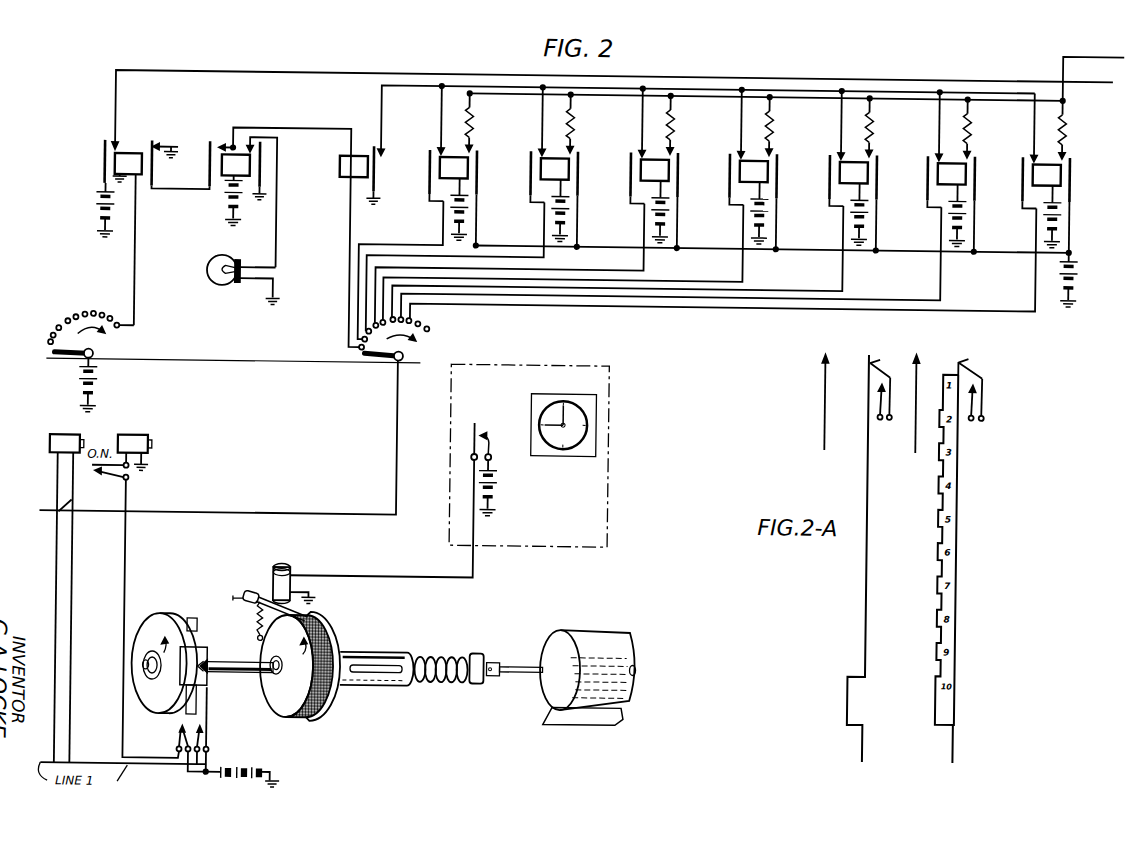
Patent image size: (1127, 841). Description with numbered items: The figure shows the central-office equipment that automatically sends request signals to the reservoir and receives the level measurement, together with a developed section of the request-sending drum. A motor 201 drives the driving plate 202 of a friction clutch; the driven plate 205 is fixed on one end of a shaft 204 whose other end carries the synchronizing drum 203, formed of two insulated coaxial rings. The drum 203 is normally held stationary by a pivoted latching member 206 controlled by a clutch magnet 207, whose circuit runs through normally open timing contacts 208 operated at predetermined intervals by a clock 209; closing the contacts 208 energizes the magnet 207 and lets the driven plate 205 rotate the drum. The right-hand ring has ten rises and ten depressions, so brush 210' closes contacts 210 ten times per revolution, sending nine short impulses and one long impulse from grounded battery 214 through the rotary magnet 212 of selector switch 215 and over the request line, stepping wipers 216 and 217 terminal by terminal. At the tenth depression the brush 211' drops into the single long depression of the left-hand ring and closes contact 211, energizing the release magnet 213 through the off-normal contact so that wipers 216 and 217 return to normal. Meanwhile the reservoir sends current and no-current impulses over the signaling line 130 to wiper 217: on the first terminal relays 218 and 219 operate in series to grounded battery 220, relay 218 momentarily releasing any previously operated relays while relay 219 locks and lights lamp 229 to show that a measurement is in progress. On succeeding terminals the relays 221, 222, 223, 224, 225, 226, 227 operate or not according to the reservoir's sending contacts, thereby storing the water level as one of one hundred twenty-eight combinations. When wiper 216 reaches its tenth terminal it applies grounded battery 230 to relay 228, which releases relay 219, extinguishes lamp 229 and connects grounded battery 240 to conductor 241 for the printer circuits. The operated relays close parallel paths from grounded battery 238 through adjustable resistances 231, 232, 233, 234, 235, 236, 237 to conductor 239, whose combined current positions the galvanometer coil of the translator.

In FIG. 2, the signaling line 130 is at (191, 511).
In FIG. 2, the motor 201 is at (624, 640).
In FIG. 2, the driving plate of friction clutch 202 is at (344, 629).
In FIG. 2, the synchronizing drum 203 is at (178, 612).
In FIG. 2, the shaft 204 is at (224, 660).
In FIG. 2, the driven plate of friction clutch 205 is at (289, 706).
In FIG. 2, the pivoted latching member 206 is at (265, 608).
In FIG. 2, the clutch magnet 207 is at (293, 563).
In FIG. 2, the timing contacts 208 is at (494, 437).
In FIG. 2, the clock 209 is at (602, 424).
In FIG. 2, the contacts 210 is at (212, 731).
In FIG. 2-A, the contacts 210 is at (986, 410).
In FIG. 2, the brush 210' is at (227, 719).
In FIG. 2-A, the brush 210' is at (984, 372).
In FIG. 2, the contact 211 is at (188, 736).
In FIG. 2-A, the contact 211 is at (893, 411).
In FIG. 2, the brush 211' is at (158, 731).
In FIG. 2-A, the brush 211' is at (897, 372).
In FIG. 2, the rotary magnet of selector switch 212 is at (66, 434).
In FIG. 2, the release magnet of selector switch 213 is at (132, 433).
In FIG. 2, the grounded battery 214 is at (254, 760).
In FIG. 2, the selector switch 215 is at (233, 375).
In FIG. 2, the wiper 216 is at (64, 359).
In FIG. 2, the wiper 217 is at (391, 359).
In FIG. 2, the relay 218 is at (362, 162).
In FIG. 2, the relay 219 is at (253, 164).
In FIG. 2, the grounded battery 220 is at (224, 199).
In FIG. 2, the relay 221 is at (463, 164).
In FIG. 2, the relay 222 is at (564, 164).
In FIG. 2, the relay 223 is at (664, 164).
In FIG. 2, the relay 224 is at (763, 164).
In FIG. 2, the relay 225 is at (863, 164).
In FIG. 2, the relay 226 is at (961, 164).
In FIG. 2, the relay 227 is at (1056, 164).
In FIG. 2, the relay 228 is at (126, 151).
In FIG. 2, the lamp 229 is at (210, 267).
In FIG. 2, the grounded battery 230 is at (100, 375).
In FIG. 2, the resistance 231 is at (472, 119).
In FIG. 2, the resistance 232 is at (573, 119).
In FIG. 2, the resistance 233 is at (673, 119).
In FIG. 2, the resistance 234 is at (772, 119).
In FIG. 2, the resistance 235 is at (872, 119).
In FIG. 2, the resistance 236 is at (970, 119).
In FIG. 2, the resistance 237 is at (1065, 119).
In FIG. 2, the grounded battery 238 is at (1078, 275).
In FIG. 2, the conductor 239 is at (1112, 45).
In FIG. 2, the grounded battery 240 is at (99, 209).
In FIG. 2, the conductor 241 is at (910, 70).